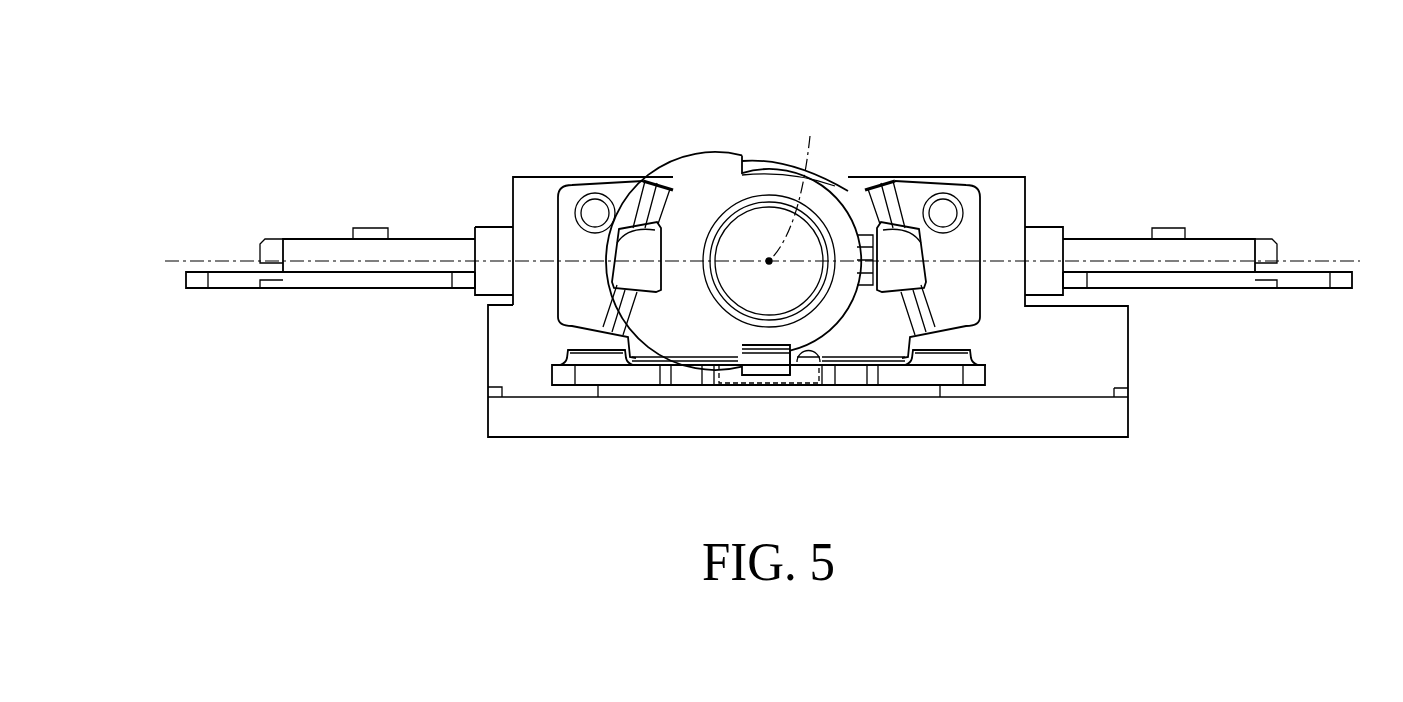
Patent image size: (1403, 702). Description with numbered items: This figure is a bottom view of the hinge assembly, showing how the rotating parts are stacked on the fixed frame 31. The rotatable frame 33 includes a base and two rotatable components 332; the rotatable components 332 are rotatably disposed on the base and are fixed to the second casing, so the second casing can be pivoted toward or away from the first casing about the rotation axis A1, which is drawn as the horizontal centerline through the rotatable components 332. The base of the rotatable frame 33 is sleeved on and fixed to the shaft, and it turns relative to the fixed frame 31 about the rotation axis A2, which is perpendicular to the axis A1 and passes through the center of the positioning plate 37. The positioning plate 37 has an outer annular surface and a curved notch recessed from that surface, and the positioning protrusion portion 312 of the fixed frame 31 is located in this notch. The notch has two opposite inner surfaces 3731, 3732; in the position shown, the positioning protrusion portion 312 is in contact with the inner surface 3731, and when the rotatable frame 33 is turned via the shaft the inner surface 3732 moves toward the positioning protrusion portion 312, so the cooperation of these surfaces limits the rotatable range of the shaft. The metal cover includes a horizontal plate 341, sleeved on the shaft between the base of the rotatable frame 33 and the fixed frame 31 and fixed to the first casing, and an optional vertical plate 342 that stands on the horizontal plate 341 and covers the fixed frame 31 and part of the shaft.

The fixed frame 31 is at (873, 378).
The positioning protrusion portion 312 is at (810, 357).
The rotatable frame 33 is at (1231, 233).
The rotatable component 332 is at (487, 232).
The horizontal plate 341 is at (1001, 183).
The vertical plate 342 is at (1105, 417).
The positioning plate 37 is at (705, 322).
The inner surface 3731 is at (748, 349).
The inner surface 3732 is at (752, 157).
The rotation axis A1 is at (738, 263).
The rotation axis A2 is at (796, 188).